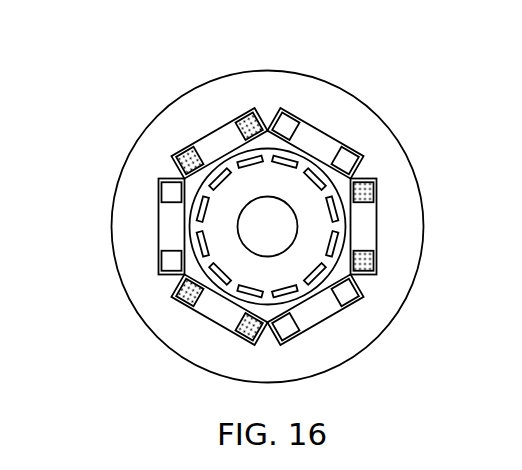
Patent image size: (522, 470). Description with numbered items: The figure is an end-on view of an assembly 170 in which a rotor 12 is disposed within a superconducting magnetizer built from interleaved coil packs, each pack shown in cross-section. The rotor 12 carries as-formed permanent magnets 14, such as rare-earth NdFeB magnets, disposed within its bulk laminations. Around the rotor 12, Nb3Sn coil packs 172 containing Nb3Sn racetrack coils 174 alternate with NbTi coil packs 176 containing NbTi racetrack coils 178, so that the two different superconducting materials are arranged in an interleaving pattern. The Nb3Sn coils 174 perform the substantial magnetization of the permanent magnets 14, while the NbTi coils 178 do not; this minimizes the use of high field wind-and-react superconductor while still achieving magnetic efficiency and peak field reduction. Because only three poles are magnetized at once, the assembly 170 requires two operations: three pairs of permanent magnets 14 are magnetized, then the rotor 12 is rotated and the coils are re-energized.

The assembly 170 is at (112, 75).
The Nb3Sn coil pack 172 is at (326, 131).
The Nb3Sn racetrack coil 174 is at (292, 113).
The NbTi coil pack 176 is at (213, 131).
The NbTi racetrack coil 178 is at (182, 153).
The rotor 12 is at (347, 181).
The permanent magnet 14 is at (335, 215).